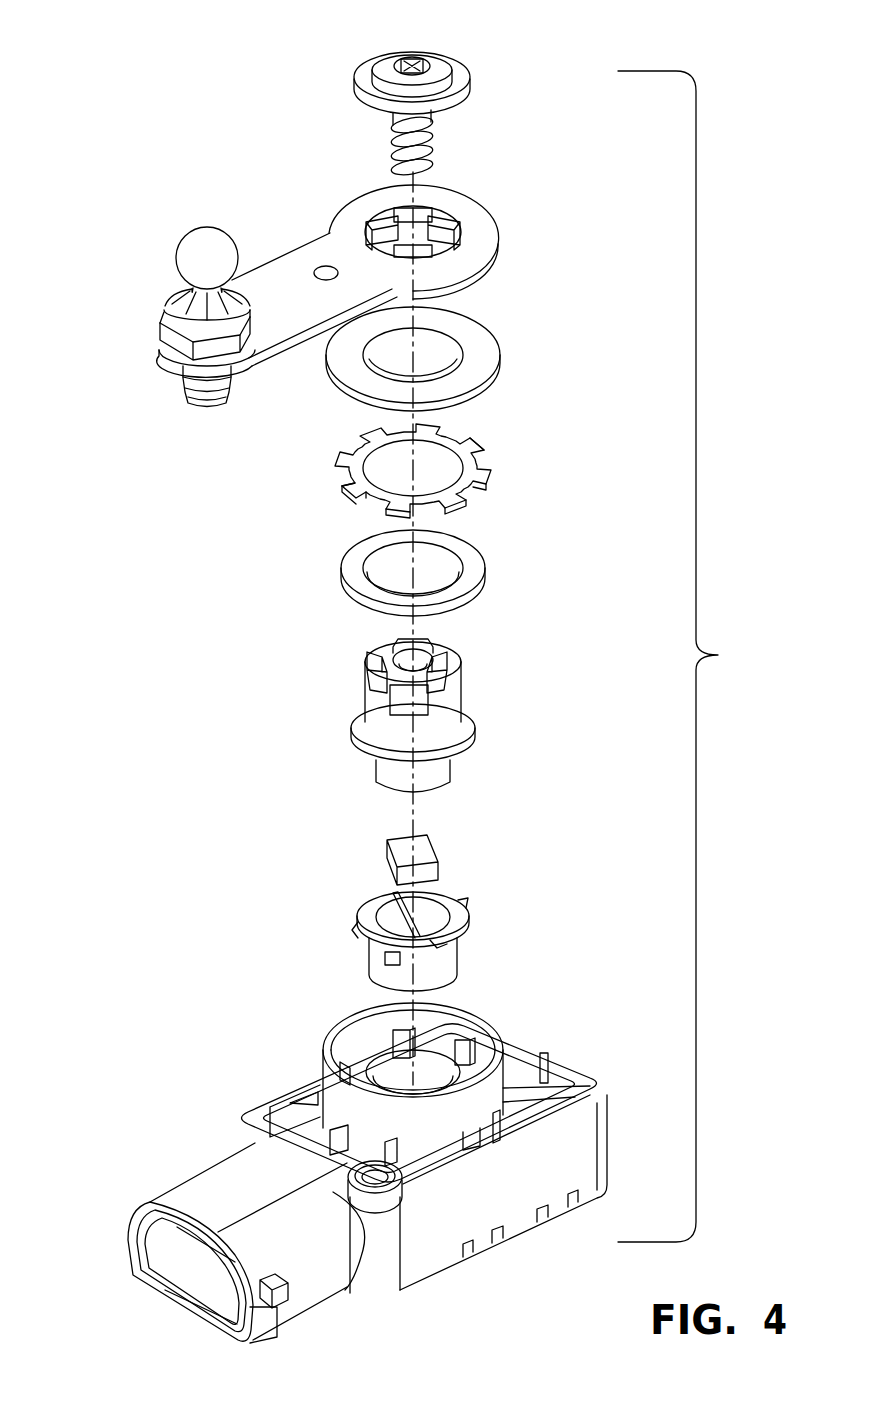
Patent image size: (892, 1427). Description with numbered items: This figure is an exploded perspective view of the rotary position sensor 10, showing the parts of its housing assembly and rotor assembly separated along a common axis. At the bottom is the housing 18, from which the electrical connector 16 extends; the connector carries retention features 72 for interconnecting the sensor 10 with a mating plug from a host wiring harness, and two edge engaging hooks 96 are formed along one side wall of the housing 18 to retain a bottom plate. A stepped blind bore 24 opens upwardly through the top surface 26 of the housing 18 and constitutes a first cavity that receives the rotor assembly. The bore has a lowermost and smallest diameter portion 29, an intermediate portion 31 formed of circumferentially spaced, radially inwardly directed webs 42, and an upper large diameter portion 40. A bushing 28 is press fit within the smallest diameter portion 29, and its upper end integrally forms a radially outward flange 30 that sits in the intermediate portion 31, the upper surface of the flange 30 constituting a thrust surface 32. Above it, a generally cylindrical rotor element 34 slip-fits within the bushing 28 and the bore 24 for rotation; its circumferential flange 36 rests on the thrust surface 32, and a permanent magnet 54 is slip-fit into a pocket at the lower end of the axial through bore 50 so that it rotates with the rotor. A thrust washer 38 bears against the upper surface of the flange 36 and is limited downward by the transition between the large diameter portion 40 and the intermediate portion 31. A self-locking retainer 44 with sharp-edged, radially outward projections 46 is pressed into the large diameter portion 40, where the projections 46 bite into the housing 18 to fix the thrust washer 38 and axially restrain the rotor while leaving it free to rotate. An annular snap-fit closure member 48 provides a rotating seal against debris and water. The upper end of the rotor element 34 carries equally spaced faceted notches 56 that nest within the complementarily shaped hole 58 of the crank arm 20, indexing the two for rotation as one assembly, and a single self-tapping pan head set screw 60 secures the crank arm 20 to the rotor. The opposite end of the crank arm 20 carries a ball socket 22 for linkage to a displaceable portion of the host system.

The rotary position sensor 10 is at (683, 656).
The electrical connector 16 is at (231, 1244).
The housing 18 is at (437, 1154).
The crank arm 20 is at (285, 273).
The ball socket 22 is at (200, 248).
The stepped blind bore 24 is at (401, 1051).
The top surface 26 is at (572, 1064).
The bushing 28 is at (451, 1002).
The lowermost and smallest diameter portion 29 is at (433, 1070).
The flange 30 is at (409, 974).
The intermediate portion 31 is at (470, 1058).
The thrust surface 32 is at (462, 920).
The rotor element 34 is at (411, 666).
The circumferential flange 36 is at (470, 742).
The thrust washer 38 is at (470, 560).
The large diameter portion 40 is at (368, 1040).
The webs 42 is at (398, 1040).
The retainer 44 is at (445, 440).
The projections 46 is at (338, 462).
The closure member 48 is at (476, 326).
The axial through bore 50 is at (425, 660).
The permanent magnet 54 is at (395, 843).
The faceted notches 56 is at (380, 652).
The hole 58 is at (438, 226).
The self-tapping pan head set screw 60 is at (440, 68).
The retention features 72 is at (277, 1300).
The edge engaging hooks 96 is at (492, 1243).